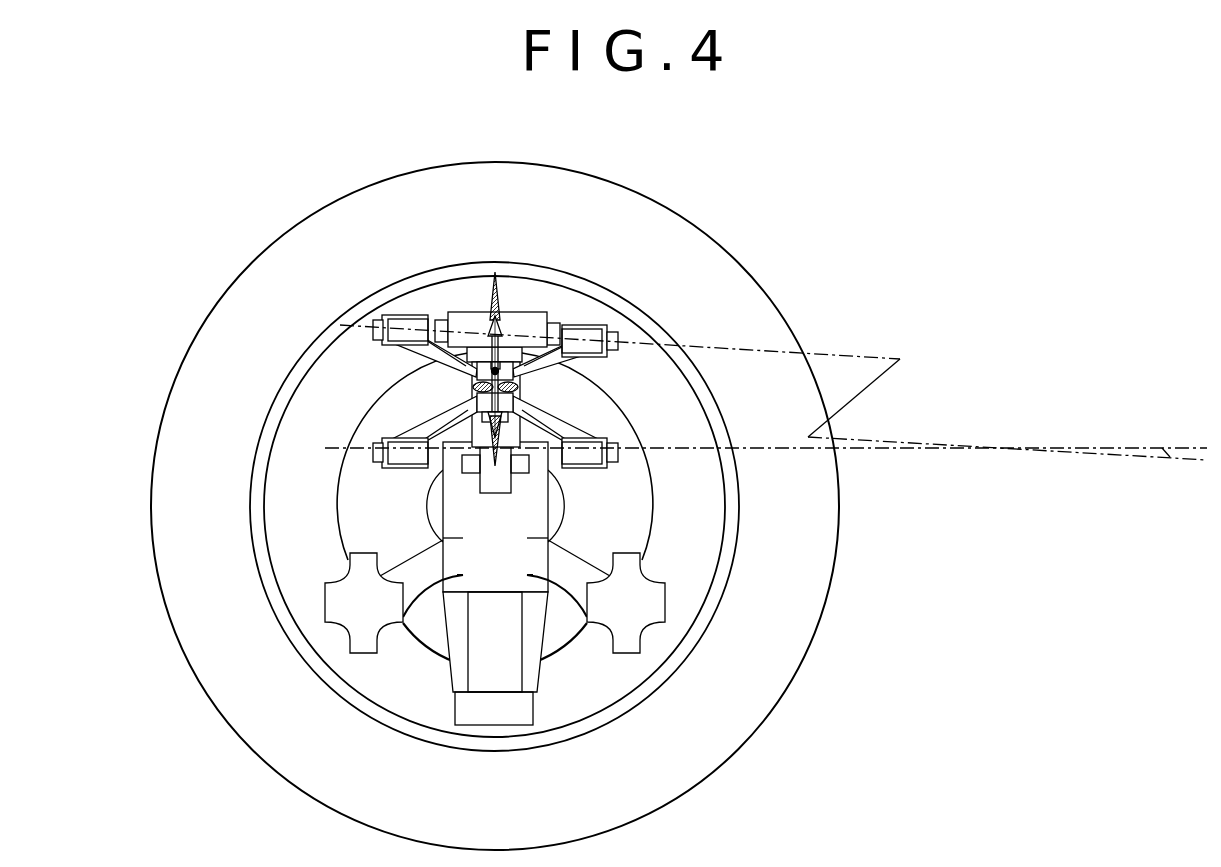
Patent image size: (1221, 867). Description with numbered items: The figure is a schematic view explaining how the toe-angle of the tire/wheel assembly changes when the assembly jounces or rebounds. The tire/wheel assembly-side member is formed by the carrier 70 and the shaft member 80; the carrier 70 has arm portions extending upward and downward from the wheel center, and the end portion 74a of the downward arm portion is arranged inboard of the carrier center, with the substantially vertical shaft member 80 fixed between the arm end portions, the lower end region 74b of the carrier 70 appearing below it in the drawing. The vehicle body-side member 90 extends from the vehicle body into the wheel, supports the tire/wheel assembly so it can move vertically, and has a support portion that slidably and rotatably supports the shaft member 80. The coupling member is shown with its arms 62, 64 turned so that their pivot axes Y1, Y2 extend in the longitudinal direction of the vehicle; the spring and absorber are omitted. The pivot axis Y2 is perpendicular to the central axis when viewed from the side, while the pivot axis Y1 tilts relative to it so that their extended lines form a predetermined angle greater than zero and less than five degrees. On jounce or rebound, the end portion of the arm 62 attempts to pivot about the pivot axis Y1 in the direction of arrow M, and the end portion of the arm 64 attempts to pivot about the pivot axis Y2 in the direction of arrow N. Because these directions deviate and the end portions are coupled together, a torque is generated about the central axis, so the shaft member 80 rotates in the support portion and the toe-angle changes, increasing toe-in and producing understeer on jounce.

The arm 62 is at (408, 312).
The arm 64 is at (378, 440).
The end portion of the arm portion 74a is at (467, 320).
The second drive motor 74b is at (490, 715).
The carrier 70 is at (530, 665).
The shaft member 80 is at (478, 650).
The vehicle body-side member 90 is at (452, 500).
The arrow N is at (498, 275).
The arrow M is at (508, 320).
The pivot axis Y1 is at (638, 340).
The pivot axis Y2 is at (757, 446).